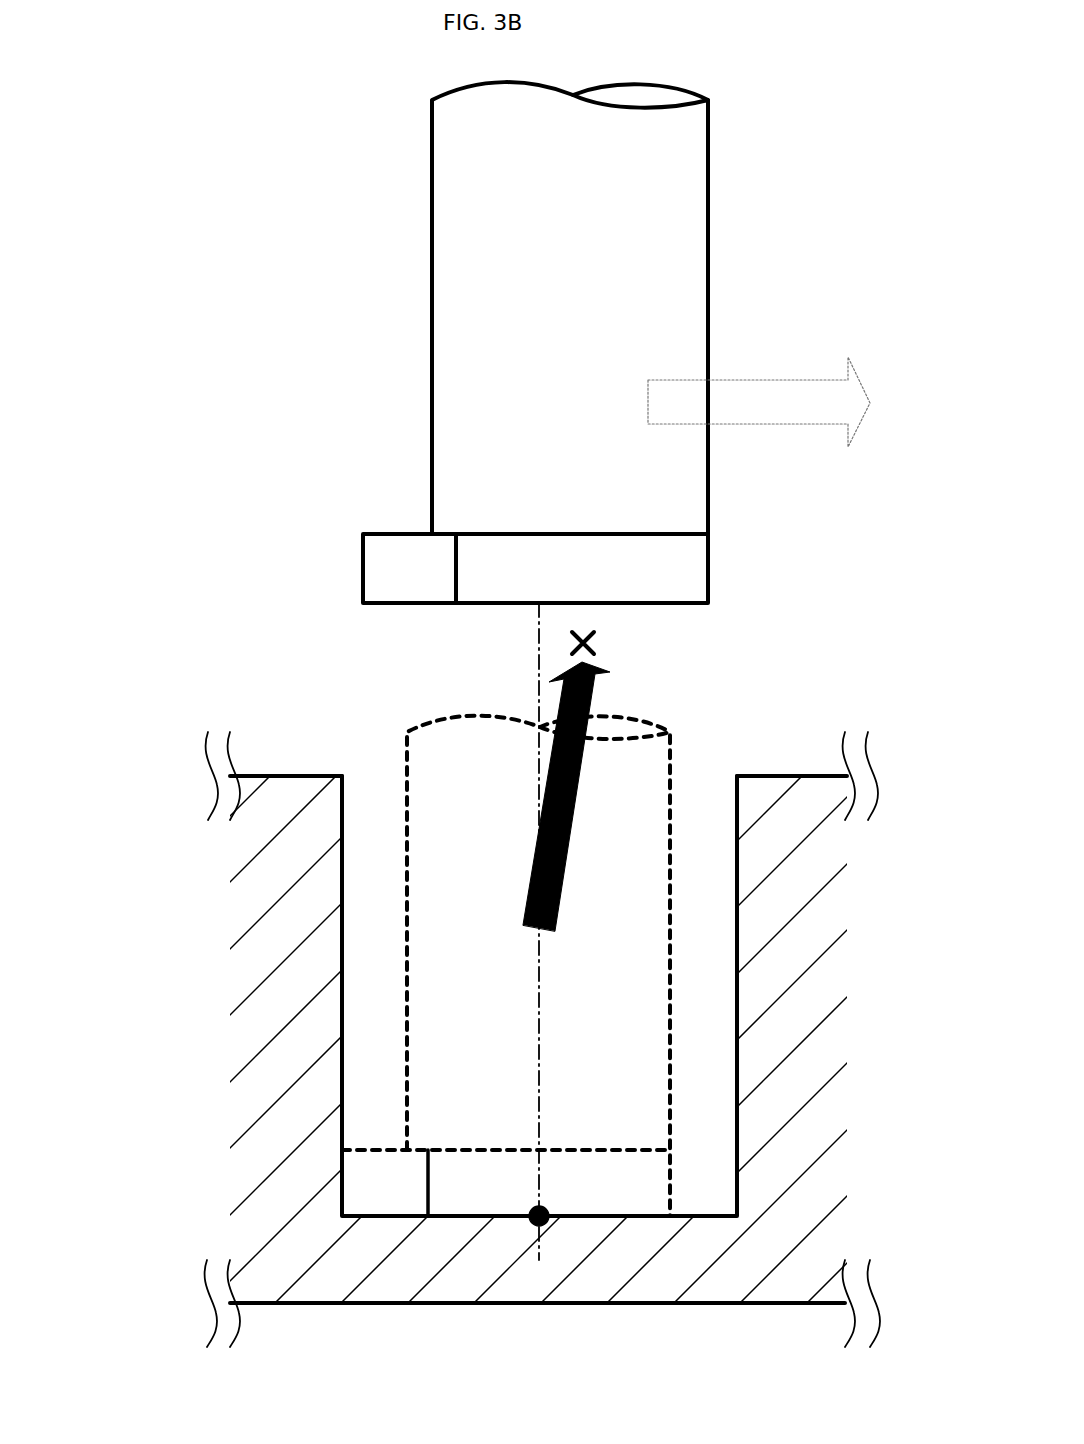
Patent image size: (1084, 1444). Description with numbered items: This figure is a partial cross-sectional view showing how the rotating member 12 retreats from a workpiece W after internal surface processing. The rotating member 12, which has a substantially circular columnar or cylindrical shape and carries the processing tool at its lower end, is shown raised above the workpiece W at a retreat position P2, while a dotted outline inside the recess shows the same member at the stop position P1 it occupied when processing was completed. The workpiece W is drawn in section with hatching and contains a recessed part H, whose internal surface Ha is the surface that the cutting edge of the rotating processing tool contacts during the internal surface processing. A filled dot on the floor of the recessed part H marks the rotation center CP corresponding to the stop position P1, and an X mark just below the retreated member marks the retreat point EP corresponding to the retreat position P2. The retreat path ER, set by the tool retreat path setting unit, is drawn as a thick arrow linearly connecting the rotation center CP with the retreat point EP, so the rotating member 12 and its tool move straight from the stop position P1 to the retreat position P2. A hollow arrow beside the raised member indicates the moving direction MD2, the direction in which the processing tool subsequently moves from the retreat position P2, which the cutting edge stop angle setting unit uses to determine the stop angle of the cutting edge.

The rotating member 12 is at (450, 250).
The retreat position P2 is at (668, 262).
The moving direction MD2 is at (782, 389).
The retreat point EP is at (584, 630).
The workpiece W is at (298, 775).
The recessed part H is at (385, 797).
The retreat path ER is at (530, 888).
The internal surface Ha is at (342, 1015).
The stop position P1 is at (624, 1120).
The rotation center CP is at (580, 1217).